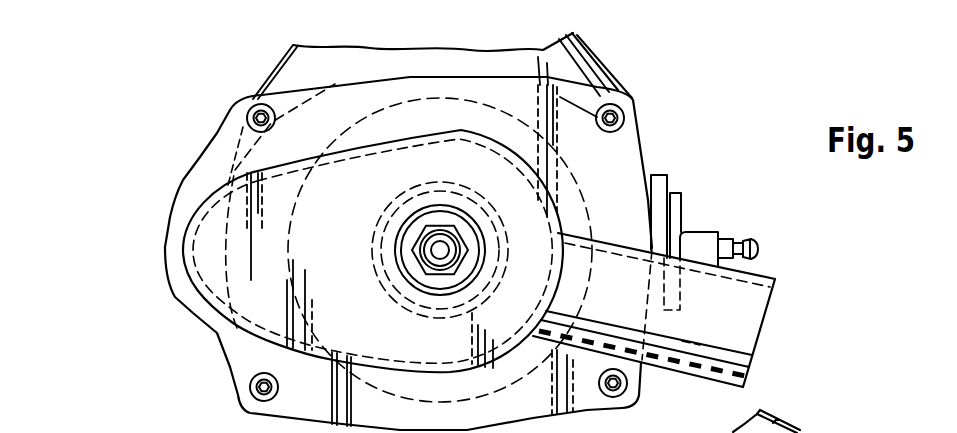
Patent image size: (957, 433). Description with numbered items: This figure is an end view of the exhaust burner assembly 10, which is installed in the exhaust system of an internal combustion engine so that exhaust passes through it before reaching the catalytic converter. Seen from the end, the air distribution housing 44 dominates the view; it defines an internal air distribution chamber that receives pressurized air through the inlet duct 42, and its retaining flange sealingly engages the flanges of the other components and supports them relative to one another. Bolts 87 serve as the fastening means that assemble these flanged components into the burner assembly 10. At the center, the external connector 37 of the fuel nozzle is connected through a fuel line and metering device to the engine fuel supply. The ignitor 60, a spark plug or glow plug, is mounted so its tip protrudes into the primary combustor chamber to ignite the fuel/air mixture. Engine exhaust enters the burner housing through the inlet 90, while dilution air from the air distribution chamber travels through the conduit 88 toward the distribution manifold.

The exhaust burner assembly 10 is at (650, 91).
The external connector 37 is at (464, 240).
The inlet duct 42 is at (633, 205).
The housing 44 is at (349, 149).
The ignitor 60 is at (698, 240).
The bolts 87 is at (250, 117).
The conduit 88 is at (194, 271).
The inlet 90 is at (293, 70).